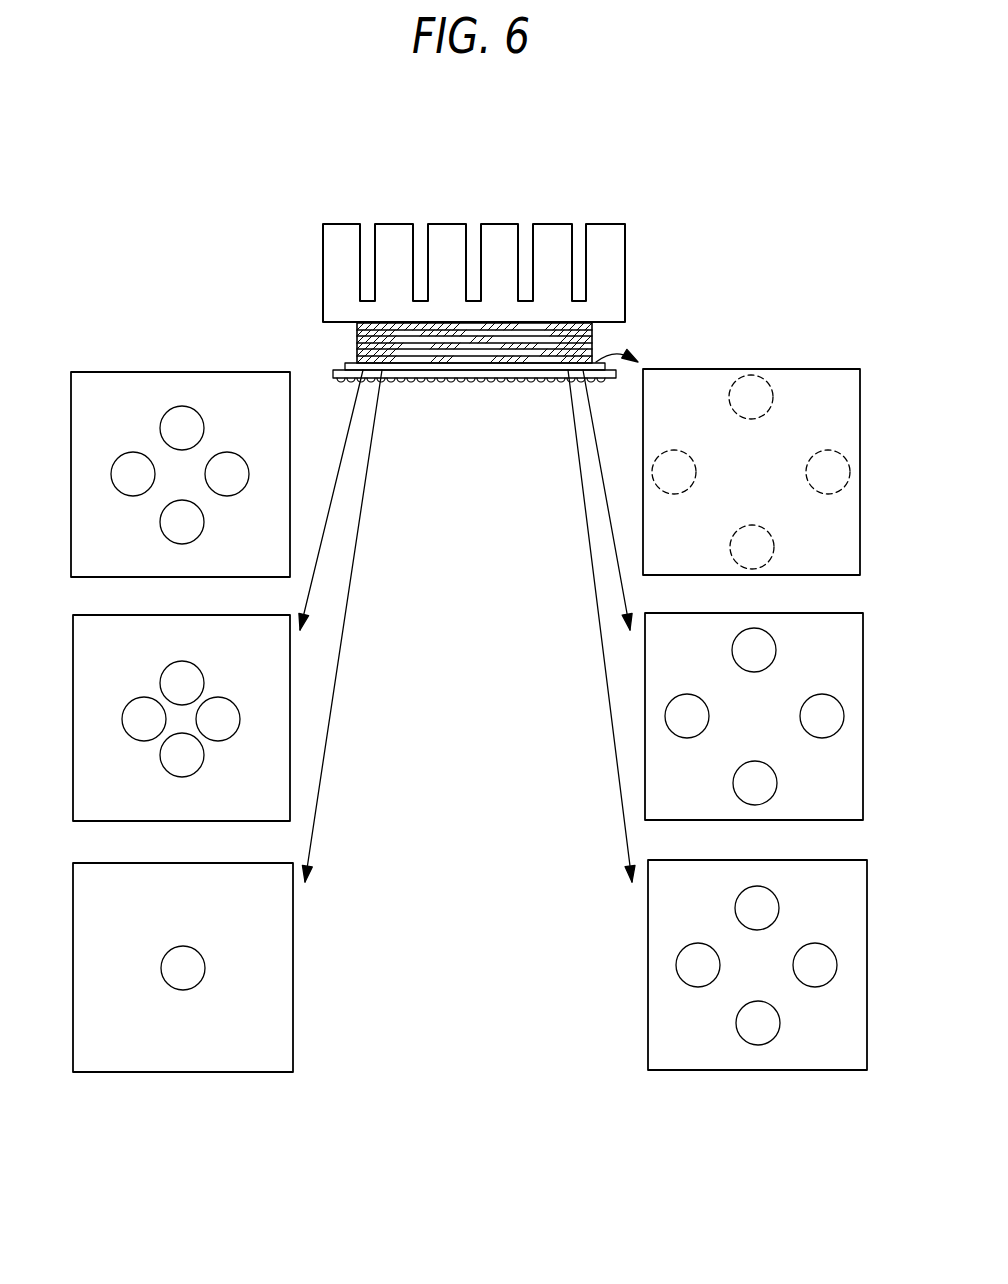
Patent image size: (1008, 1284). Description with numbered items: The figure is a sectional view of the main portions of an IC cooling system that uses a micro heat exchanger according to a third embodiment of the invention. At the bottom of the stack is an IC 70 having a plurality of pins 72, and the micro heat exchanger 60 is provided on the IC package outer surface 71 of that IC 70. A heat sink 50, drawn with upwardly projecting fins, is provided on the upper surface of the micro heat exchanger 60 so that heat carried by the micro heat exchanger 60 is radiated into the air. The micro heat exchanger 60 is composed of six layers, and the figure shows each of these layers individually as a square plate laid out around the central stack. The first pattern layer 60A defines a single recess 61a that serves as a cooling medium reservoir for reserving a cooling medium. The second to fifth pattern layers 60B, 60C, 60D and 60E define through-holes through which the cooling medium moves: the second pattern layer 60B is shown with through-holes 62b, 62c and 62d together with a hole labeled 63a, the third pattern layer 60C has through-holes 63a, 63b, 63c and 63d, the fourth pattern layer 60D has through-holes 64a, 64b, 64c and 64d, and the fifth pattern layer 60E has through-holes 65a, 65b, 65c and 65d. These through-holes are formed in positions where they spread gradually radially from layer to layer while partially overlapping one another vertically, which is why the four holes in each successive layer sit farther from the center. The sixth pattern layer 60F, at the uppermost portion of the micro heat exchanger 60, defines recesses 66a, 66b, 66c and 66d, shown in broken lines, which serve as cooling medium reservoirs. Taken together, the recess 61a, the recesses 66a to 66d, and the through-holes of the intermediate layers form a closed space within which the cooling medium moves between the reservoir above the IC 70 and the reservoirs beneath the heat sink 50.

The heat sink 50 is at (340, 235).
The micro heat exchanger 60 is at (357, 348).
The IC 70 is at (498, 383).
The IC package outer surface 71 is at (594, 338).
The pins 72 is at (403, 383).
The first pattern layer 60A is at (160, 1072).
The second pattern layer 60B is at (187, 821).
The third pattern layer 60C is at (290, 465).
The fourth pattern layer 60D is at (690, 1070).
The fifth pattern layer 60E is at (708, 820).
The sixth pattern layer 60F is at (785, 575).
The recess 61a is at (205, 972).
The through-hole 62b is at (192, 678).
The through-hole 62c is at (230, 712).
The through-hole 62d is at (170, 767).
The through-hole 63a is at (127, 462).
The through-hole 63b is at (193, 408).
The through-hole 63c is at (233, 485).
The through-hole 63d is at (170, 523).
The through-hole 64a is at (685, 963).
The through-hole 64b is at (773, 893).
The through-hole 64c is at (818, 982).
The through-hole 64d is at (738, 1025).
The through-hole 65a is at (686, 695).
The through-hole 65b is at (777, 650).
The through-hole 65c is at (823, 735).
The through-hole 65d is at (735, 780).
The recess 66a is at (657, 460).
The recess 66b is at (733, 385).
The recess 66c is at (827, 450).
The recess 66d is at (733, 557).